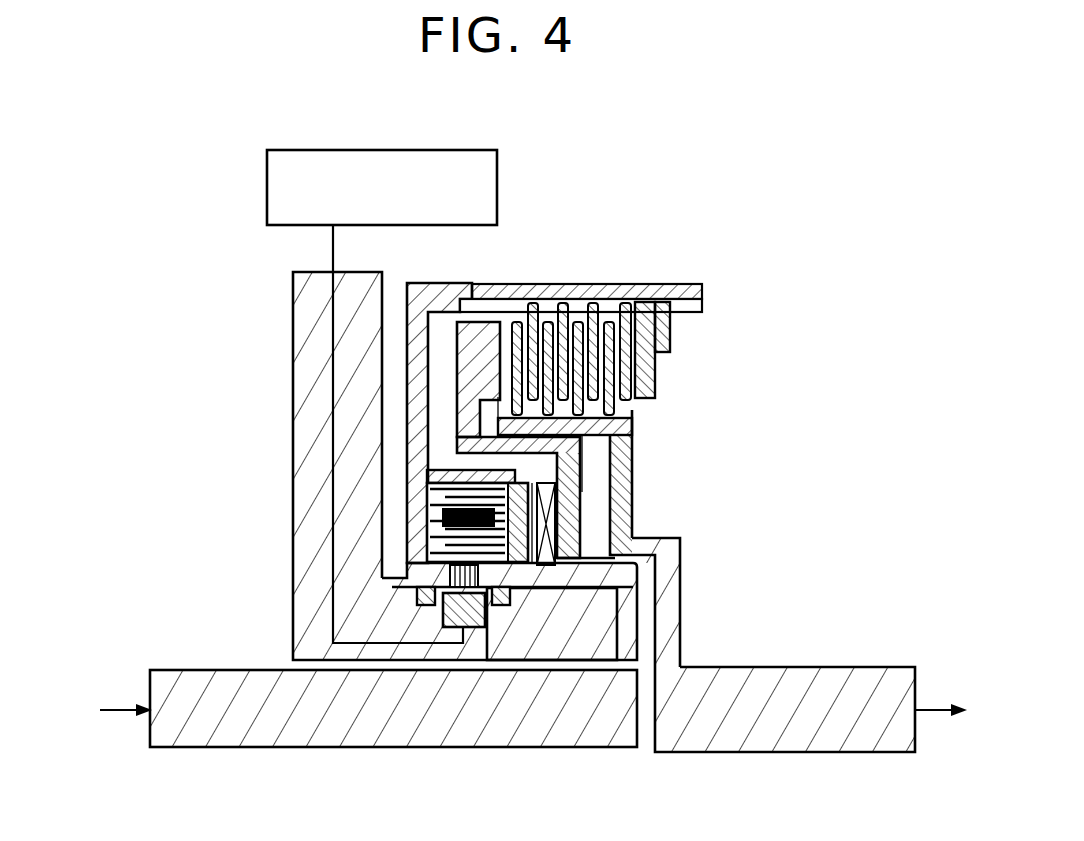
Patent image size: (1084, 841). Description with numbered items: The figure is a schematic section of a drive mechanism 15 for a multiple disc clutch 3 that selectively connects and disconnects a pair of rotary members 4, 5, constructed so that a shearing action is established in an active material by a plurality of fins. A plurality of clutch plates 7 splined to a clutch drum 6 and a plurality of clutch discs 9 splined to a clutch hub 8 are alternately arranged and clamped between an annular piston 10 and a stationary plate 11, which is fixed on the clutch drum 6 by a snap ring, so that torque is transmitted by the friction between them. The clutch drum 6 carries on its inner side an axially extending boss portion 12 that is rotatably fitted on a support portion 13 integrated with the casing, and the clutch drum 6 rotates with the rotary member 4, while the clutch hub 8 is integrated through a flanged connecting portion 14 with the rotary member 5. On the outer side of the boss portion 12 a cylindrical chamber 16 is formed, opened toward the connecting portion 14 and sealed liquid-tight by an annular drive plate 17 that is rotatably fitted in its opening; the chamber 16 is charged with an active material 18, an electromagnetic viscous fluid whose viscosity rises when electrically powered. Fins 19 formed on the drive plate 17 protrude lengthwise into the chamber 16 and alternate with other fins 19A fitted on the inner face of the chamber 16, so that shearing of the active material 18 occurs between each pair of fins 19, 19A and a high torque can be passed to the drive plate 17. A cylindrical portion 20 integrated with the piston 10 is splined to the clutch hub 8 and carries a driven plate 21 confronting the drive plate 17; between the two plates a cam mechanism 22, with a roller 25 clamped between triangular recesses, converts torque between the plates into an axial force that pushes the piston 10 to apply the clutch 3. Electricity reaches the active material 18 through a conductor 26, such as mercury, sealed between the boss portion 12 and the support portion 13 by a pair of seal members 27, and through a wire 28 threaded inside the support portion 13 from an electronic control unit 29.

The clutch 3 is at (730, 295).
The rotary member 4 is at (240, 747).
The rotary member 5 is at (807, 667).
The clutch drum 6 is at (481, 284).
The clutch plates 7 is at (591, 303).
The clutch hub 8 is at (640, 427).
The clutch discs 9 is at (622, 378).
The annular piston 10 is at (483, 333).
The stationary plate 11 is at (650, 333).
The boss portion 12 is at (540, 578).
The support portion 13 is at (292, 330).
The connecting portion 14 is at (600, 480).
The drive mechanism 15 is at (440, 452).
The chamber 16 is at (428, 476).
The drive plate 17 is at (680, 563).
The active material 18 is at (445, 522).
The fins 19 is at (478, 538).
The other fins 19A is at (428, 513).
The cylindrical portion 20 is at (620, 477).
The driven plate 21 is at (566, 490).
The cam mechanism 22 is at (603, 535).
The roller 25 is at (595, 518).
The conductor 26 is at (472, 628).
The seal members 27 is at (425, 606).
The wire 28 is at (323, 432).
The electronic control unit (ECU) 29 is at (497, 171).